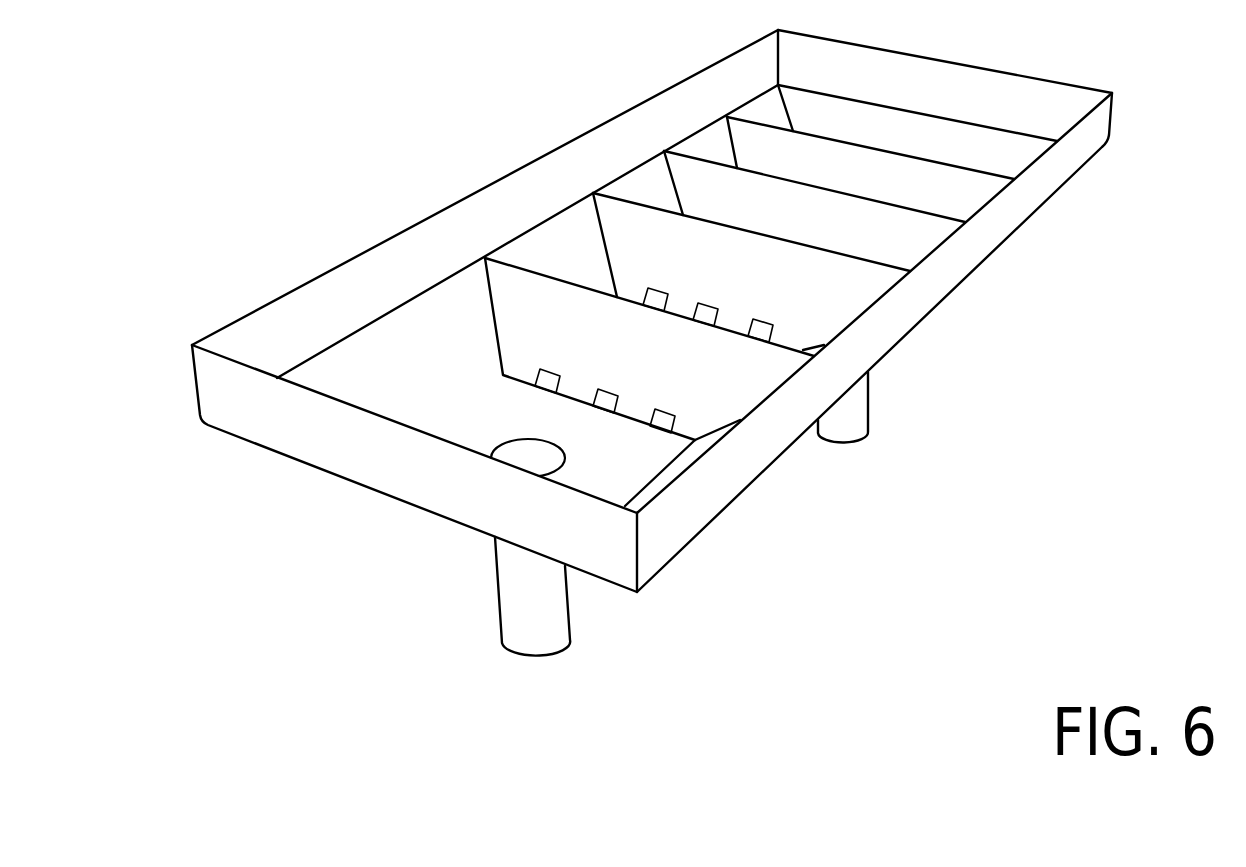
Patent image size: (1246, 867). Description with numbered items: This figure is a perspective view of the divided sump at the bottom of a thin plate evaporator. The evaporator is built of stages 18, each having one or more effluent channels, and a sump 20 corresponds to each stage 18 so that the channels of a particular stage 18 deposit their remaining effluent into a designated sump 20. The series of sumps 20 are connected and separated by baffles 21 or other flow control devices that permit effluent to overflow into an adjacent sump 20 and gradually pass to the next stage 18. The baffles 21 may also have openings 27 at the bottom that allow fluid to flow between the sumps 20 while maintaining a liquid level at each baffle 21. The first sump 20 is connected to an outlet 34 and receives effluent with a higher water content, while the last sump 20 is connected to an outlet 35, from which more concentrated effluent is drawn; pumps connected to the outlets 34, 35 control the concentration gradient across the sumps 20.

The stage 18 is at (833, 232).
The sump 20 is at (548, 265).
The baffle 21 is at (693, 323).
The opening 27 is at (518, 380).
The outlet 34 is at (538, 652).
The outlet 35 is at (848, 442).